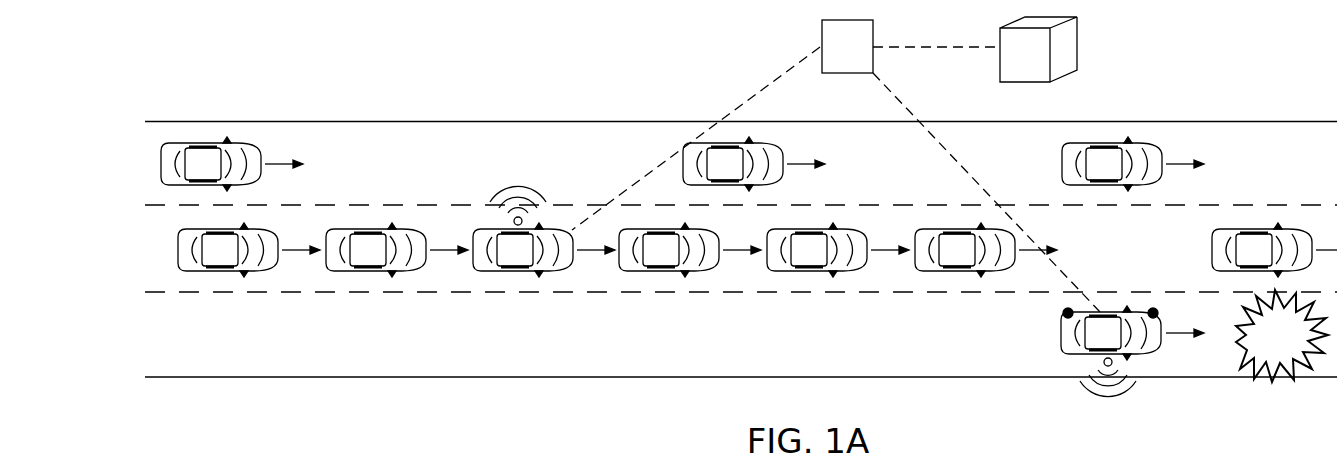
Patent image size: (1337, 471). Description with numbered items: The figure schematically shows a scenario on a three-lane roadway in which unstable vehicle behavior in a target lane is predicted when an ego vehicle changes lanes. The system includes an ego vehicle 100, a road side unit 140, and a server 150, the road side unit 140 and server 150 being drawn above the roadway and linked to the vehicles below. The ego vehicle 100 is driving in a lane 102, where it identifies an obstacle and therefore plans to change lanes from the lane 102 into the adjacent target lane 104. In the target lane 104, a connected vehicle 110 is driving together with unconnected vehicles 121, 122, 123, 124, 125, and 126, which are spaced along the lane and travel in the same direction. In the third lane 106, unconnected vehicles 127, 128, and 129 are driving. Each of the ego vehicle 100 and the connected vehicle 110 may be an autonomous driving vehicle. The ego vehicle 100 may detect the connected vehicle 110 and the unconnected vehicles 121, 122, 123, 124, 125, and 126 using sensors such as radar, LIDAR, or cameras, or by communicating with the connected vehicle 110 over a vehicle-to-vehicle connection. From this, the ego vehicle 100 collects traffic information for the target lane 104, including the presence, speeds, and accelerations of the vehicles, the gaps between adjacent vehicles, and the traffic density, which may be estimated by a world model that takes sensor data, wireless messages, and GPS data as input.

The ego vehicle 100 is at (1060, 332).
The lane 102 is at (148, 353).
The target lane 104 is at (148, 276).
The third lane 106 is at (148, 183).
The connected vehicle 110 is at (560, 228).
The unconnected vehicle 121 is at (1278, 228).
The unconnected vehicle 122 is at (1000, 228).
The unconnected vehicle 123 is at (855, 230).
The unconnected vehicle 124 is at (700, 270).
The unconnected vehicle 125 is at (412, 228).
The unconnected vehicle 126 is at (263, 228).
The unconnected vehicle 127 is at (1140, 143).
The unconnected vehicle 128 is at (765, 143).
The unconnected vehicle 129 is at (240, 143).
The road side unit 140 is at (822, 38).
The server 150 is at (1080, 43).